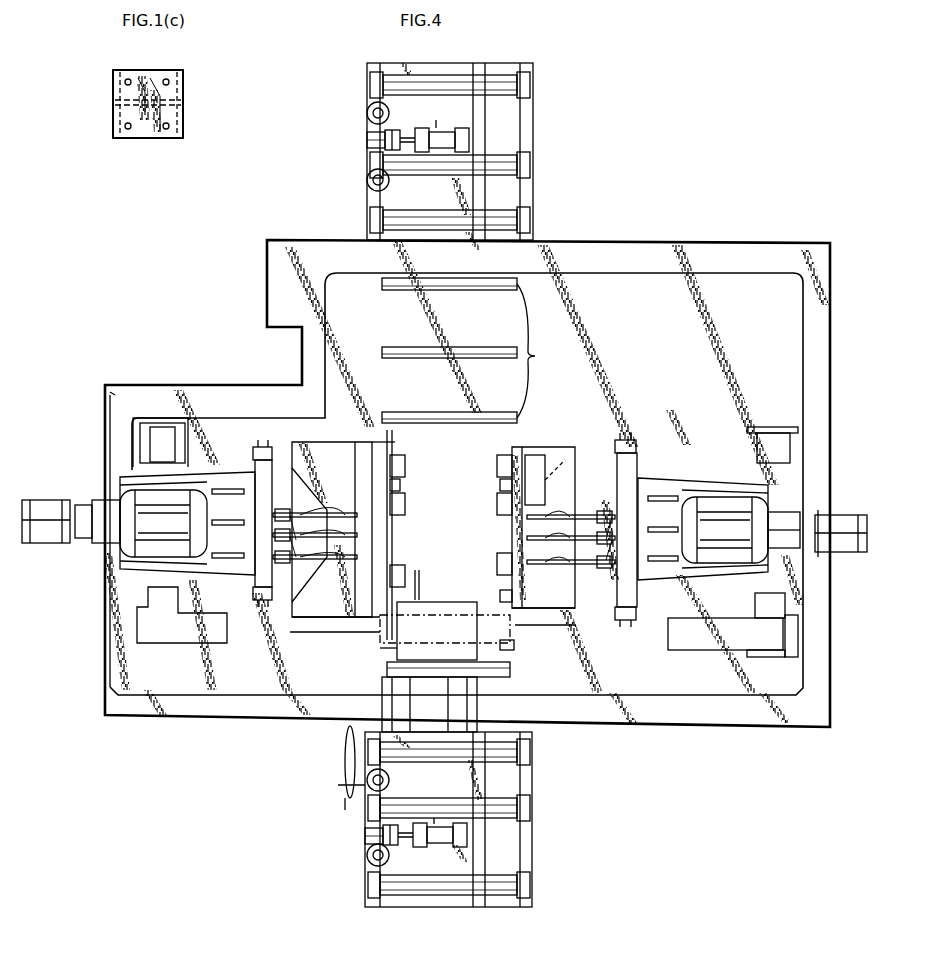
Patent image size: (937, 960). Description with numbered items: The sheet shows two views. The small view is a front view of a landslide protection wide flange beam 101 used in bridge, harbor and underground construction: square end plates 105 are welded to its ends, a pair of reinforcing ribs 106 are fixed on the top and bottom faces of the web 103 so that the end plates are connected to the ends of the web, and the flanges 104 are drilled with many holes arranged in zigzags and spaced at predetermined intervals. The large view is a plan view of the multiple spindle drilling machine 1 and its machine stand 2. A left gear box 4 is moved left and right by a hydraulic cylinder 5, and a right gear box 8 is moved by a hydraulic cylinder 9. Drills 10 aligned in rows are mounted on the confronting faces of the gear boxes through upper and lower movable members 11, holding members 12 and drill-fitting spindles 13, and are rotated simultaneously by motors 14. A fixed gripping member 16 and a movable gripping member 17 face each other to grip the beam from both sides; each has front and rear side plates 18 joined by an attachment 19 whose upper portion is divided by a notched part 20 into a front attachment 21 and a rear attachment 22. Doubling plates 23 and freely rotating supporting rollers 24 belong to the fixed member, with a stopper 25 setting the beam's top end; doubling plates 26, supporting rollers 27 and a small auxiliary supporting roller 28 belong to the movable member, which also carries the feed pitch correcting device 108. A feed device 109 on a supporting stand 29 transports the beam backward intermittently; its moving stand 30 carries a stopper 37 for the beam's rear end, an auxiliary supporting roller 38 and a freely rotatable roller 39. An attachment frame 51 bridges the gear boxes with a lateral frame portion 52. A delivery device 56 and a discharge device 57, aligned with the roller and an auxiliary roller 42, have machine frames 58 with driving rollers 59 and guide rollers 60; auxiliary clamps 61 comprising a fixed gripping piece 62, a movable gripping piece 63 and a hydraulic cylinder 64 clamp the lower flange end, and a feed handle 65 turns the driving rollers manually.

In FIG. 1C, the landslide protection wide flange beam 101 is at (180, 70).
In FIG. 1C, the web 103 is at (127, 110).
In FIG. 1C, the flanges 104 is at (114, 92).
In FIG. 1C, the end plates 105 is at (158, 70).
In FIG. 1C, the reinforcing ribs 106 is at (144, 80).
In FIG. 4, the multiple spindle drilling machine 1 is at (625, 718).
In FIG. 4, the machine stand 2 is at (720, 718).
In FIG. 4, the left gear box 4 is at (203, 476).
In FIG. 4, the hydraulic cylinder 5 is at (83, 506).
In FIG. 4, the right gear box 8 is at (668, 482).
In FIG. 4, the hydraulic cylinder 9 is at (842, 516).
In FIG. 4, the drills 10 is at (328, 522).
In FIG. 4, the movable members 11 is at (255, 466).
In FIG. 4, the holding members 12 is at (282, 520).
In FIG. 4, the drill-fitting spindles 13 is at (296, 559).
In FIG. 4, the motors 14 is at (132, 478).
In FIG. 4, the fixed gripping member 16 is at (350, 440).
In FIG. 4, the movable gripping member 17 is at (560, 444).
In FIG. 4, the side plates 18 is at (290, 443).
In FIG. 4, the attachment 19 is at (370, 482).
In FIG. 4, the notched part 20 is at (385, 532).
In FIG. 4, the front attachment 21 is at (356, 644).
In FIG. 4, the rear attachment 22 is at (370, 462).
In FIG. 4, the doubling plates 23 is at (397, 447).
In FIG. 4, the supporting rollers 24 is at (401, 464).
In FIG. 4, the stopper 25 is at (399, 482).
In FIG. 4, the doubling plates 26 is at (497, 485).
In FIG. 4, the supporting rollers 27 is at (497, 464).
In FIG. 4, the auxiliary supporting roller 28 is at (511, 653).
In FIG. 4, the supporting stand 29 is at (378, 700).
In FIG. 4, the moving stand 30 is at (378, 666).
In FIG. 4, the stopper 37 is at (426, 584).
In FIG. 4, the auxiliary supporting roller 38 is at (407, 593).
In FIG. 4, the freely rotatable roller 39 is at (510, 675).
In FIG. 4, the auxiliary roller 42 is at (470, 350).
In FIG. 4, the attachment frame 51 is at (715, 652).
In FIG. 4, the lateral frame portion 52 is at (722, 621).
In FIG. 4, the delivery device 56 is at (368, 885).
In FIG. 4, the discharge device 57 is at (370, 88).
In FIG. 4, the machine frames 58 is at (531, 126).
In FIG. 4, the driving rollers 59 is at (530, 88).
In FIG. 4, the guide rollers 60 is at (367, 114).
In FIG. 4, the auxiliary clamps 61 is at (453, 483).
In FIG. 4, the fixed gripping piece 62 is at (367, 140).
In FIG. 4, the movable gripping piece 63 is at (399, 133).
In FIG. 4, the hydraulic cylinder 64 is at (467, 142).
In FIG. 4, the feed handle 65 is at (344, 741).
In FIG. 4, the feed pitch correcting device 108 is at (573, 470).
In FIG. 4, the feed device 109 is at (468, 616).